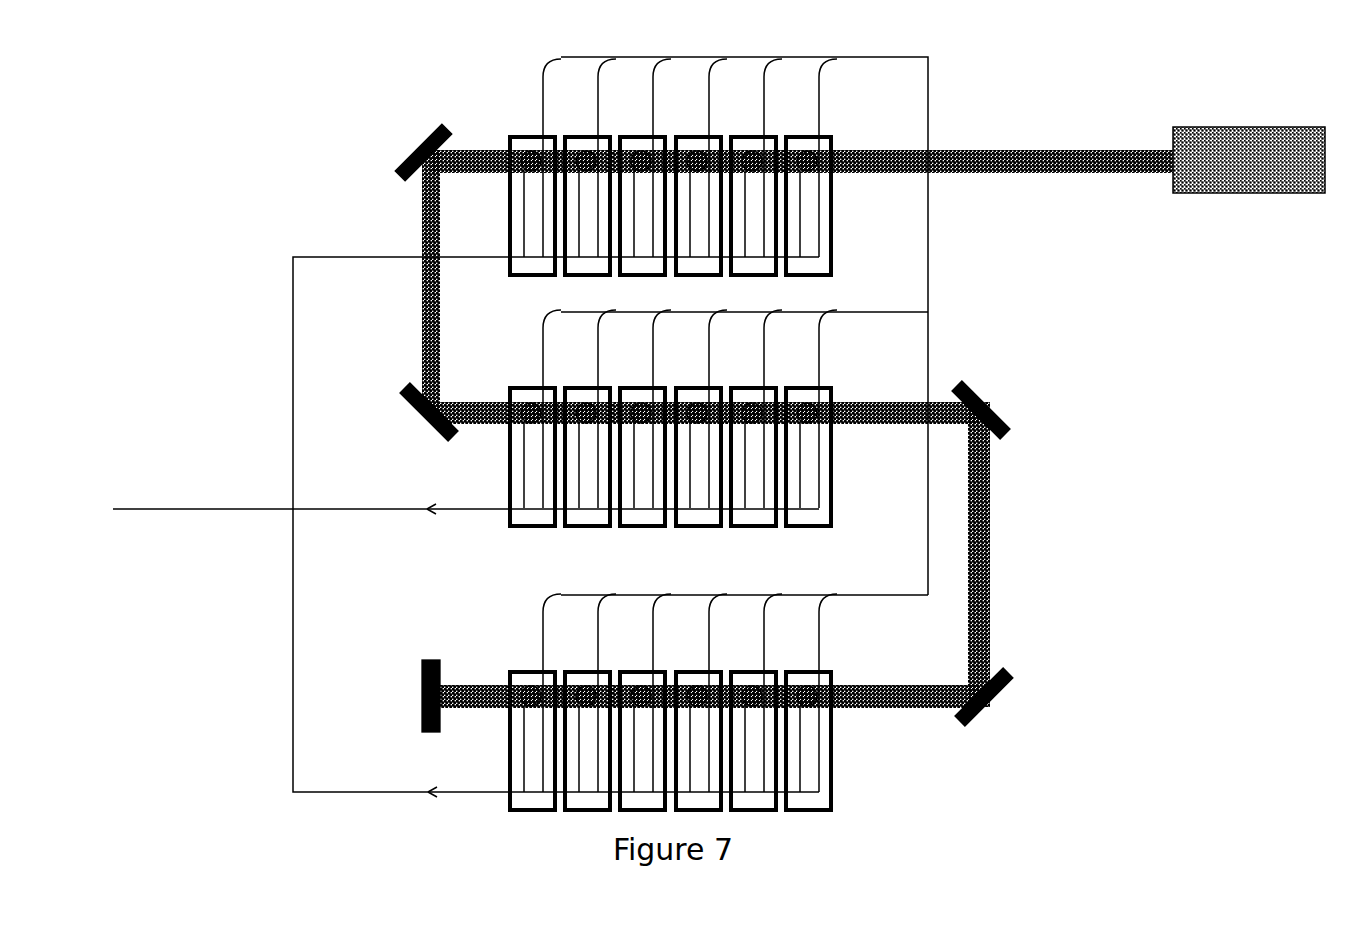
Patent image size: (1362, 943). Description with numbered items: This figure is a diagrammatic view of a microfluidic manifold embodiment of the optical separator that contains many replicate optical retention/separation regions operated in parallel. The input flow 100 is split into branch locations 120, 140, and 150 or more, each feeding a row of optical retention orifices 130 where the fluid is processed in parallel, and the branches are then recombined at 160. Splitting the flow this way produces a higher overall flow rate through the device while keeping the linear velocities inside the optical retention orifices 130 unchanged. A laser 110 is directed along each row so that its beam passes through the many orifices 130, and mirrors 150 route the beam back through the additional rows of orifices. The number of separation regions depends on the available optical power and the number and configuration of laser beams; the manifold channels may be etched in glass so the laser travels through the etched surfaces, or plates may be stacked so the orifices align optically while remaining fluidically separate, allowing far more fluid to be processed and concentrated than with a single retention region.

The input flow 100 is at (928, 57).
The laser 110 is at (1249, 160).
The split flow location 120 is at (758, 306).
The optical retention orifices 130 is at (817, 172).
The split flow location 140 is at (775, 314).
The mirrors 150 is at (681, 428).
The recombination point 160 is at (465, 493).